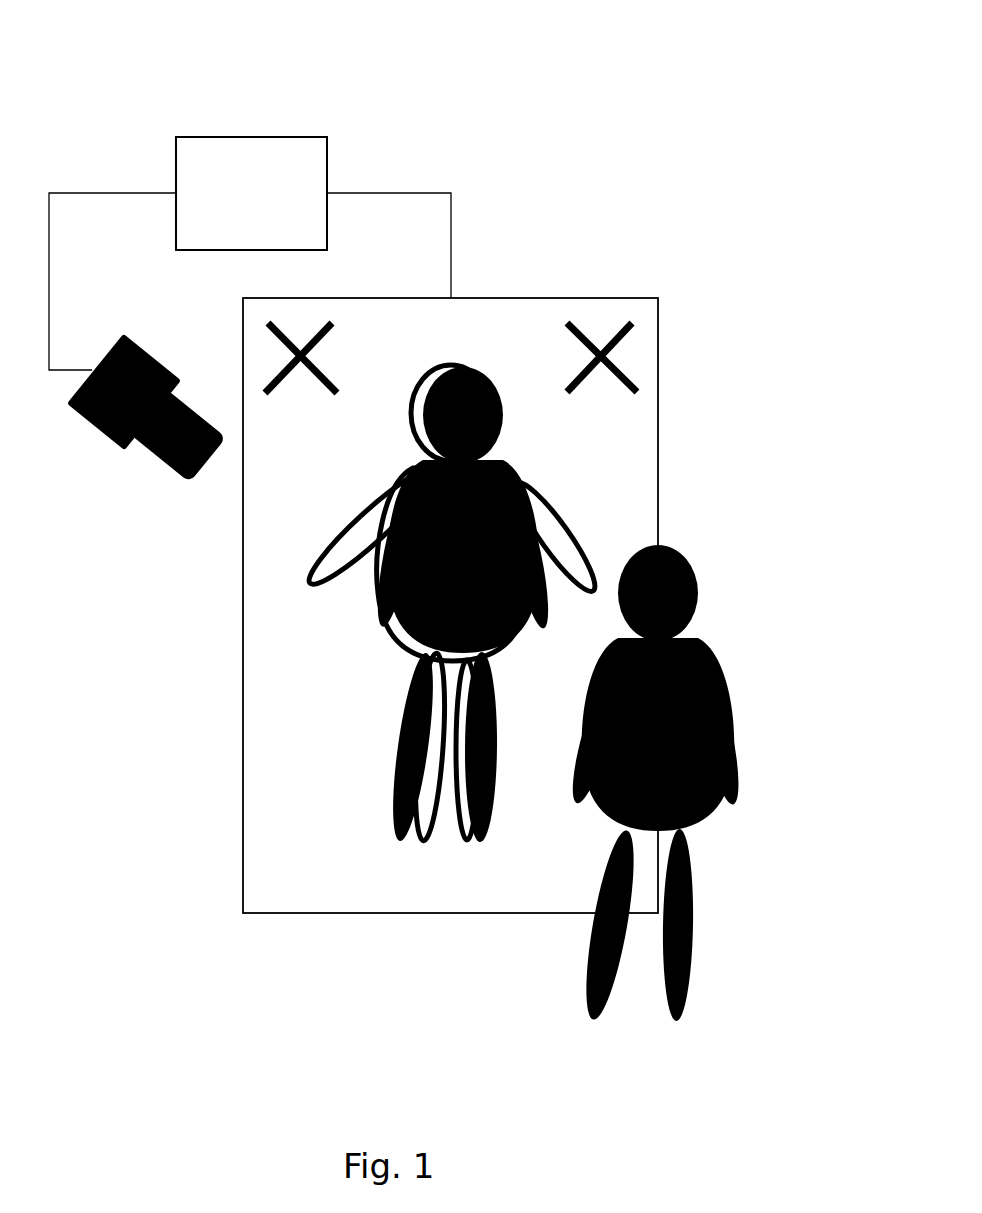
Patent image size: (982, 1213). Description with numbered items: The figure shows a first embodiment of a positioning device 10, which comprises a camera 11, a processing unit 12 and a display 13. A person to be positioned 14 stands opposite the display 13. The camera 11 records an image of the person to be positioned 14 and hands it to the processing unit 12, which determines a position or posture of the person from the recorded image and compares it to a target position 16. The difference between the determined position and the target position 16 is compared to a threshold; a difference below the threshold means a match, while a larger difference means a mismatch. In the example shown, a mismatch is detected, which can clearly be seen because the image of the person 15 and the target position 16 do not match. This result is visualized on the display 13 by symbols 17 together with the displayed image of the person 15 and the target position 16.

The positioning device 10 is at (584, 140).
The camera 11 is at (108, 437).
The processing unit 12 is at (301, 135).
The display 13 is at (632, 297).
The person to be positioned 14 is at (757, 645).
The image of the person 15 is at (530, 410).
The target position 16 is at (573, 528).
The symbols 17 is at (260, 337).